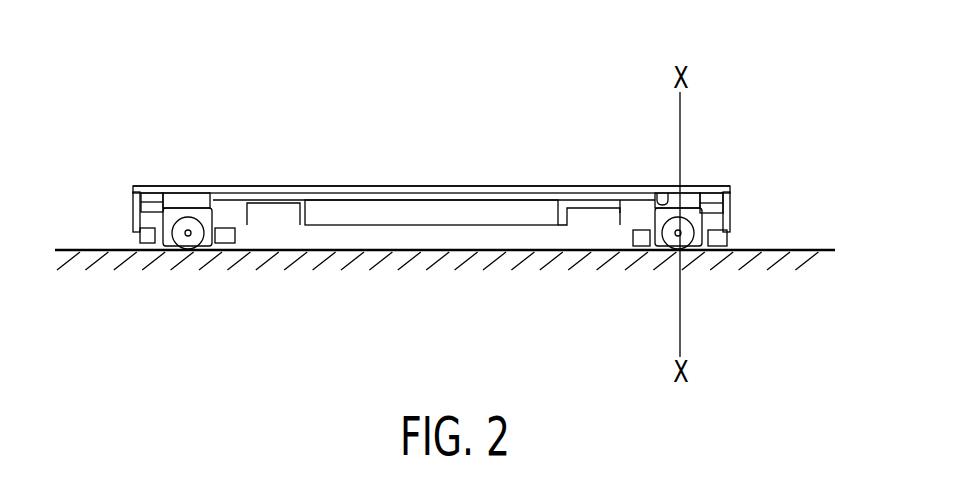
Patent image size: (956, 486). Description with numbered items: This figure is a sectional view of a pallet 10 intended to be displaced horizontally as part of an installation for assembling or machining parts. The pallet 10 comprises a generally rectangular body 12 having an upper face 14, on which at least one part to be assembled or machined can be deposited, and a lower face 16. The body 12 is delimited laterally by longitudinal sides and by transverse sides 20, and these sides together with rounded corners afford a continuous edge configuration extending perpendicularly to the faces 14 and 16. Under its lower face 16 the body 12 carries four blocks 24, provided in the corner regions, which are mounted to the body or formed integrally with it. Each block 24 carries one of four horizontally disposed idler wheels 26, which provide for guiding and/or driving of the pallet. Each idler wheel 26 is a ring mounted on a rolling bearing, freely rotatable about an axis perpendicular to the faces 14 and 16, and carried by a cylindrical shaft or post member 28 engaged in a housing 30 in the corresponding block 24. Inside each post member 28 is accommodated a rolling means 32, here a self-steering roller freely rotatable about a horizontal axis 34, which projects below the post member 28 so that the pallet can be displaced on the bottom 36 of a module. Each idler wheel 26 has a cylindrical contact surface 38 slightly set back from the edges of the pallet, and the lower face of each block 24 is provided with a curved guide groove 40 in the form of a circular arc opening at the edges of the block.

The pallet 10 is at (403, 158).
The body 12 is at (469, 180).
The upper face 14 is at (335, 186).
The lower face 16 is at (404, 200).
The sides 20 is at (133, 205).
The blocks 24 is at (246, 232).
The idler wheels 26 is at (143, 248).
The shaft or post member 28 is at (722, 249).
The housing 30 is at (667, 190).
The rolling means 32 is at (195, 262).
The horizontal axis 34 is at (188, 236).
The bottom 36 is at (790, 246).
The cylindrical contact surface 38 is at (136, 232).
The curved guide groove 40 is at (282, 207).